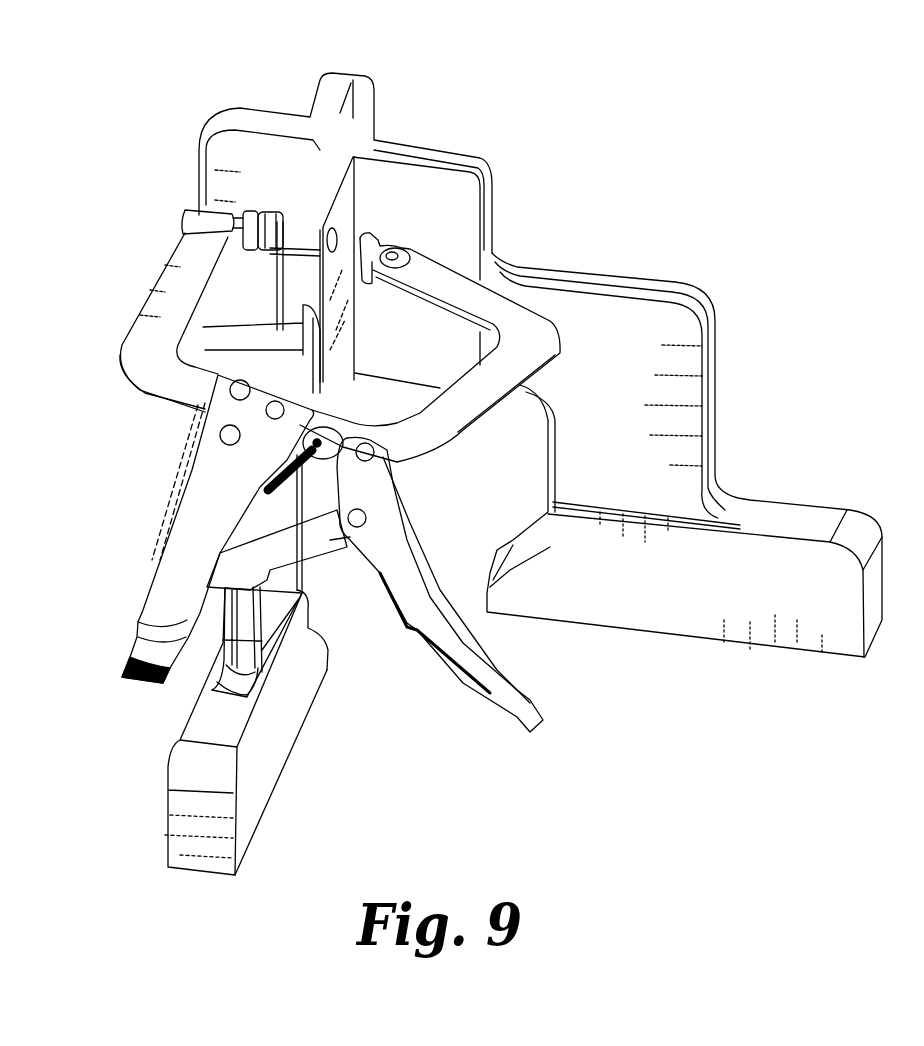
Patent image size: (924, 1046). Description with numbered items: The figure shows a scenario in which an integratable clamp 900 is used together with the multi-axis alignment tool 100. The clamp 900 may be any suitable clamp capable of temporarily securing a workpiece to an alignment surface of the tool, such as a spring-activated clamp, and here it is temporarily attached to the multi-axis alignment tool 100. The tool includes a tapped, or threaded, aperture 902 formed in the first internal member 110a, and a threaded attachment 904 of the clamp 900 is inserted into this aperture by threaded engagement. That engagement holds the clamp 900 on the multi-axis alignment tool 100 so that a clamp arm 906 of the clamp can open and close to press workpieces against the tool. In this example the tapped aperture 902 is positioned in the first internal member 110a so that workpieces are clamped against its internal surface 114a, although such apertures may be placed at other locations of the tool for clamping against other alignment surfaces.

The multi-axis alignment tool 100 is at (186, 102).
The first internal member 110a is at (327, 172).
The internal surface 114a is at (400, 242).
The integratable clamp 900 is at (208, 487).
The tapped aperture 902 is at (337, 242).
The threaded attachment 904 is at (275, 213).
The clamp arm 906 is at (530, 360).